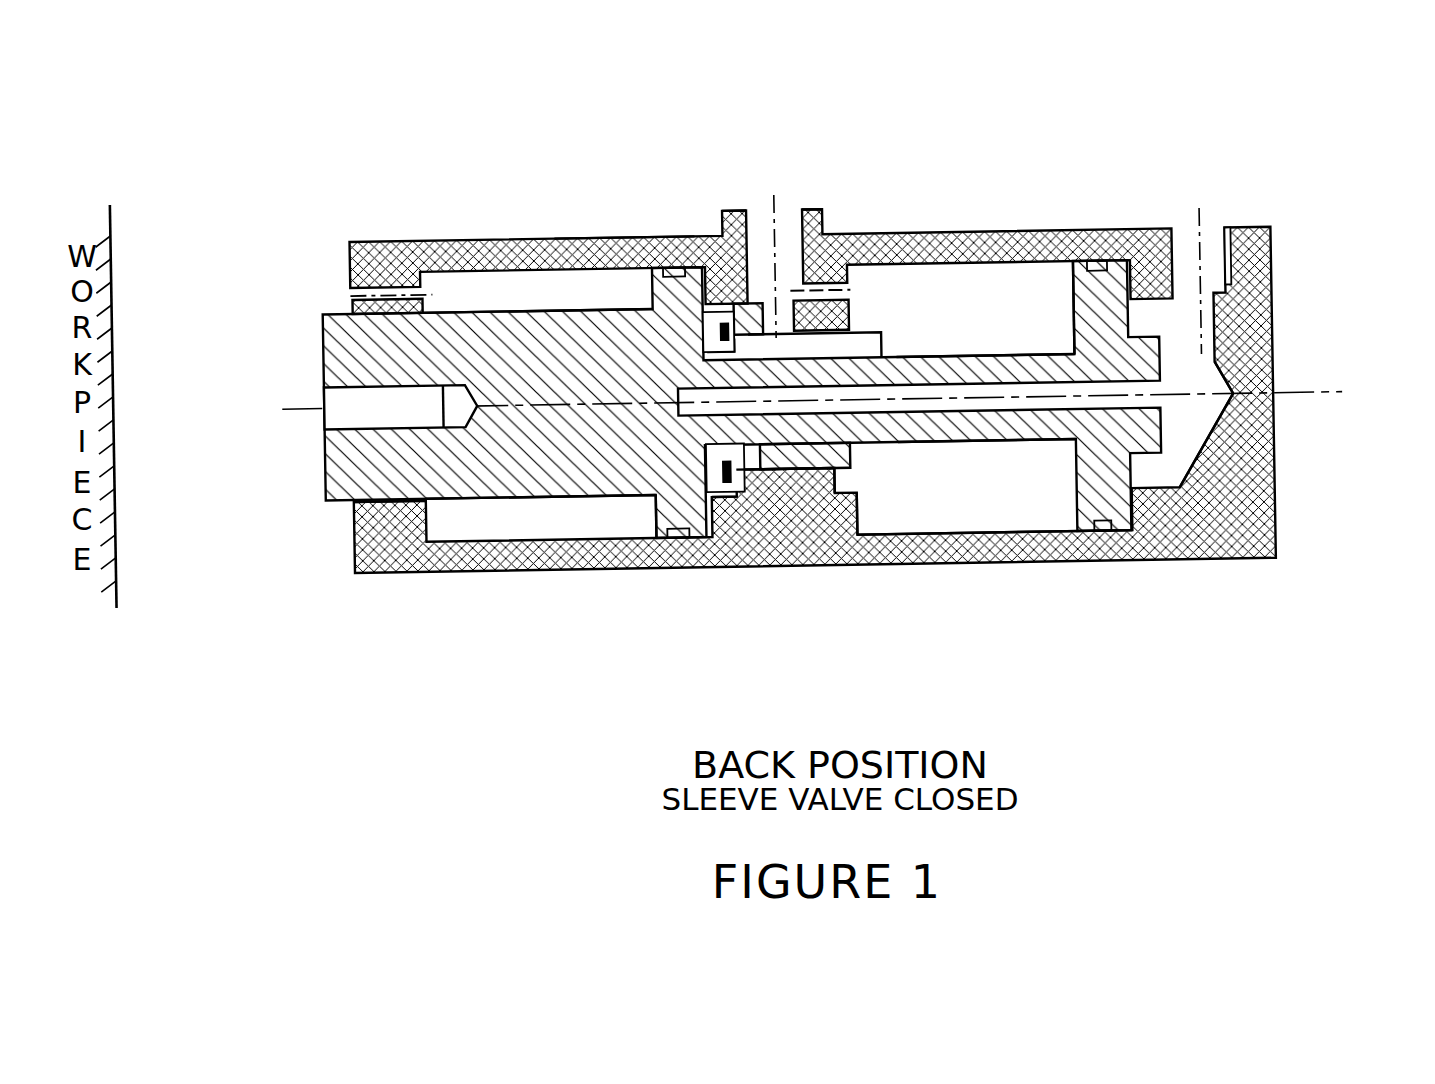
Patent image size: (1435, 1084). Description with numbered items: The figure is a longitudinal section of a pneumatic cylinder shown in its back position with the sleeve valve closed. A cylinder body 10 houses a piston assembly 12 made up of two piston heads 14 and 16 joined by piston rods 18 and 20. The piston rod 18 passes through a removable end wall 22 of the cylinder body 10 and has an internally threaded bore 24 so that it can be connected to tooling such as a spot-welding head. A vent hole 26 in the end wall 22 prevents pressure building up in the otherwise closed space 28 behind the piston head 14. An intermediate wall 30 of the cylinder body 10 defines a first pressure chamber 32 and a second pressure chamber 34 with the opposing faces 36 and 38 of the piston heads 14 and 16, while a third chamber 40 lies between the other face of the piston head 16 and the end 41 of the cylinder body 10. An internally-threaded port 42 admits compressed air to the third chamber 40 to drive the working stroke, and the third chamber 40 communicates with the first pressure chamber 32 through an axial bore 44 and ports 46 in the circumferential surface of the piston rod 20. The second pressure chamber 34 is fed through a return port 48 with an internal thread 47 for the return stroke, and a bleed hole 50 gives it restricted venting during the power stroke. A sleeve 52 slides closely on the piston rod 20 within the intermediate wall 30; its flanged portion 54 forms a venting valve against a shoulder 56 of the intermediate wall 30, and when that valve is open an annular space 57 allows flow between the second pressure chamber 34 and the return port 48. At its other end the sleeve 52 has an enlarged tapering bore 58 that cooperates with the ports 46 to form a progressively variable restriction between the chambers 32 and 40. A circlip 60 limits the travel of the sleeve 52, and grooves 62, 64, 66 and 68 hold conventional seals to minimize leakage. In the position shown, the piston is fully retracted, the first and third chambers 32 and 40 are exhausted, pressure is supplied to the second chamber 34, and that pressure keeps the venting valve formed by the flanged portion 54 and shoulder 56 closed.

The cylinder body 10 is at (760, 435).
The piston assembly 12 is at (679, 403).
The piston head 14 is at (549, 170).
The piston head 16 is at (1020, 222).
The piston rod 18 is at (469, 233).
The piston rod 20 is at (984, 325).
The end wall 22 is at (311, 563).
The internally threaded bore 24 is at (335, 434).
The vent hole 26 is at (311, 270).
The closed space 28 is at (459, 613).
The intermediate wall 30 is at (903, 504).
The first pressure chamber 32 is at (552, 612).
The second pressure chamber 34 is at (995, 583).
The face of piston head 36 is at (710, 155).
The face of piston head 38 is at (1027, 208).
The third chamber 40 is at (1306, 346).
The end of cylinder body 41 is at (1292, 450).
The internally-threaded port 42 is at (1274, 246).
The axial bore 44 is at (987, 454).
The ports 46 is at (658, 257).
The internal thread 47 is at (863, 179).
The return port 48 is at (844, 213).
The bleed hole 50 is at (879, 284).
The sleeve 52 is at (799, 595).
The flanged portion 54 is at (853, 456).
The shoulder 56 is at (863, 329).
The annular space 57 is at (893, 561).
The enlarged tapering bore 58 is at (571, 587).
The circlip 60 is at (664, 487).
The groove 62 is at (1167, 585).
The groove 64 is at (761, 565).
The groove 66 is at (672, 585).
The groove 68 is at (610, 188).